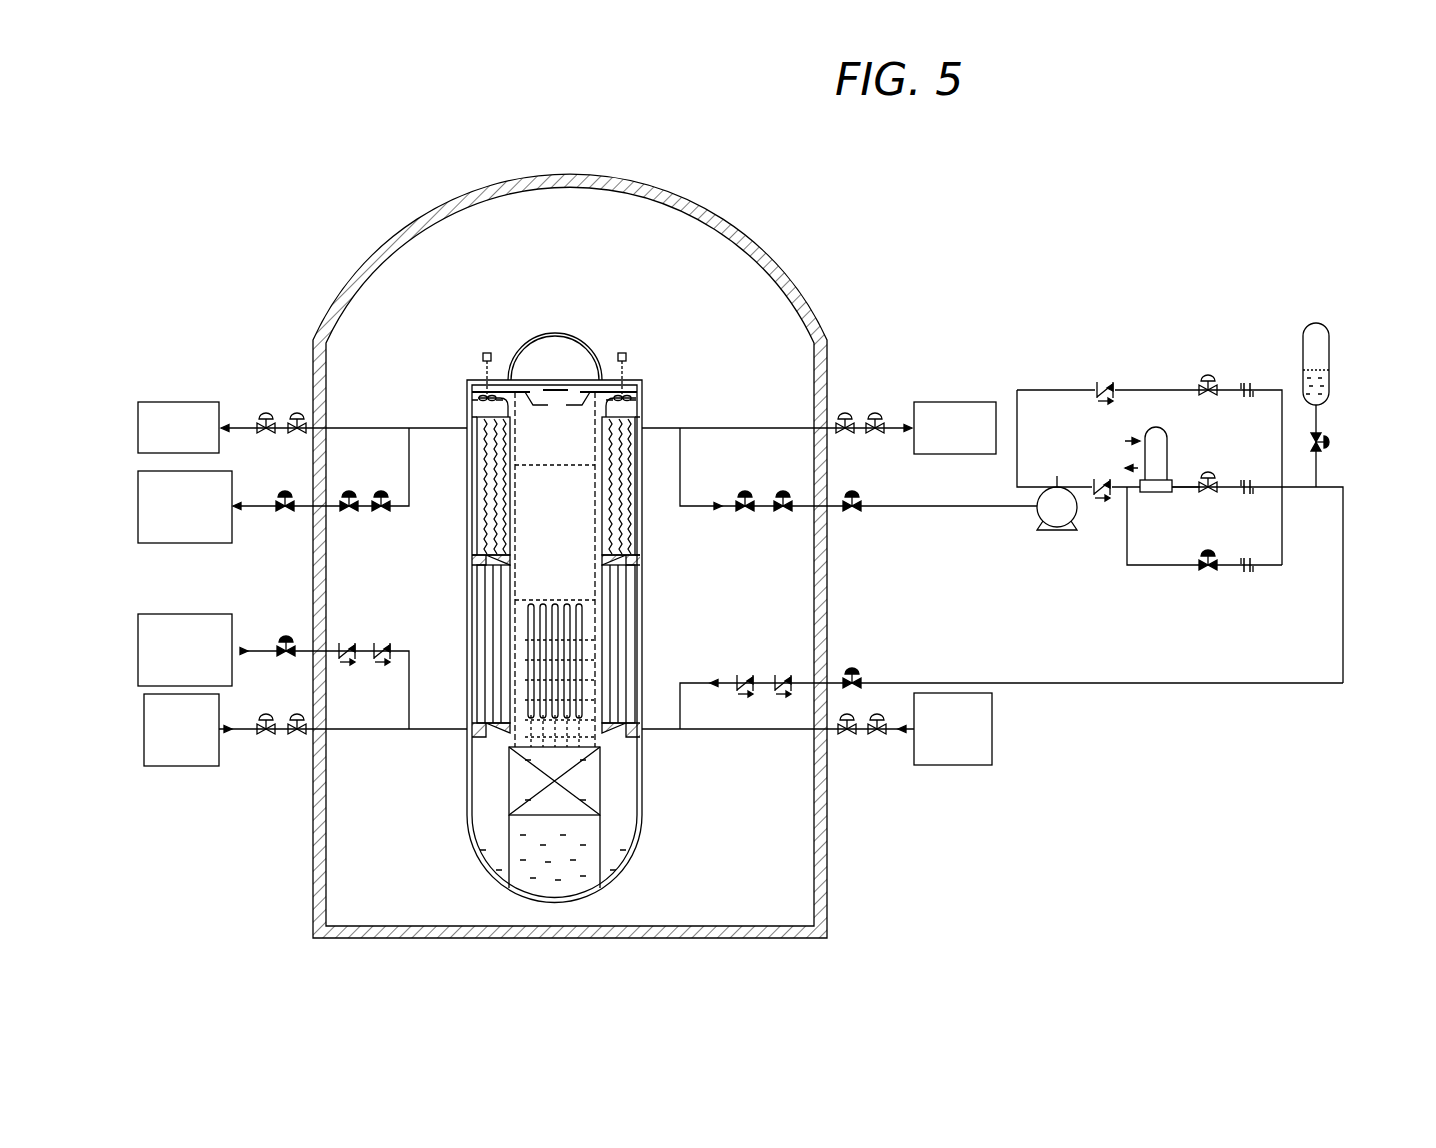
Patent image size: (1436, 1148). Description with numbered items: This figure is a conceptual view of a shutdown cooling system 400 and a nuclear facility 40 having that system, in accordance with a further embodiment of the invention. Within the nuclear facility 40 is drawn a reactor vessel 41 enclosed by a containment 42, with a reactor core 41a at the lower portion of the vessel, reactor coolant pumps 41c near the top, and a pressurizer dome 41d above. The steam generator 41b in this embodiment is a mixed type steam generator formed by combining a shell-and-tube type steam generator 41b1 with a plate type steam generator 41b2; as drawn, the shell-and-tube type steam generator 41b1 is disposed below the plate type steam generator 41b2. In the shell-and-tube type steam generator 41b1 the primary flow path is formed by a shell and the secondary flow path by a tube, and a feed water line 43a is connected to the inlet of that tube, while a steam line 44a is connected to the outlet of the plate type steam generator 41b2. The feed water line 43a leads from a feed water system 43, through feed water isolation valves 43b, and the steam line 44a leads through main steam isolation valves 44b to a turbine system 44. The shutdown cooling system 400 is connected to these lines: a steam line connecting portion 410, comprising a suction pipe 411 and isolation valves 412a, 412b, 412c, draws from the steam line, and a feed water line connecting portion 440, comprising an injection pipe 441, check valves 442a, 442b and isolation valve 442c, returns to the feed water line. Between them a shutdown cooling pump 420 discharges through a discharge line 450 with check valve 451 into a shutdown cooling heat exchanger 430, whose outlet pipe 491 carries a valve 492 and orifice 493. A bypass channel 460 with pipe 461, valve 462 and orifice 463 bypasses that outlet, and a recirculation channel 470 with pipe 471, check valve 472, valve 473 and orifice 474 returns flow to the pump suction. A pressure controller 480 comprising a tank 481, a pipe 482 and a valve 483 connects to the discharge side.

The nuclear facility 40 is at (240, 216).
The reactor vessel 41 is at (496, 593).
The reactor core 41a is at (505, 795).
The steam generator 41b is at (495, 577).
The shell-and-tube type steam generator 41b1 is at (519, 646).
The plate type steam generator 41b2 is at (470, 538).
The reactor coolant pump 41c is at (487, 350).
The pressurizer 41d is at (553, 345).
The containment 42 is at (423, 205).
The feed water system 43 is at (202, 766).
The feed water line 43a is at (660, 735).
The feed water isolation valves 43b is at (850, 740).
The turbine system 44 is at (188, 402).
The steam line 44a is at (659, 420).
The main steam isolation valves 44b is at (845, 418).
The shutdown cooling system 400 is at (1303, 268).
The steam line connecting portion 410 is at (858, 511).
The suction pipe 411 is at (708, 513).
The suction isolation valve 412a is at (746, 516).
The suction isolation valve 412b is at (785, 516).
The suction isolation valve 412c is at (855, 523).
The shutdown cooling pump 420 is at (1058, 532).
The shutdown cooling heat exchanger 430 is at (1168, 440).
The feed water line connecting portion 440 is at (1011, 662).
The injection pipe 441 is at (700, 678).
The injection check valve 442a is at (747, 673).
The injection check valve 442b is at (788, 673).
The injection isolation valve 442c is at (852, 661).
The discharge line 450 is at (1072, 485).
The discharge check valve 451 is at (1102, 500).
The bypass channel 460 is at (1204, 572).
The bypass pipe 461 is at (1152, 567).
The bypass valve 462 is at (1208, 577).
The bypass orifice 463 is at (1247, 588).
The recirculation channel 470 is at (1149, 420).
The recirculation pipe 471 is at (1060, 385).
The recirculation check valve 472 is at (1105, 380).
The recirculation valve 473 is at (1208, 376).
The recirculation orifice 474 is at (1245, 359).
The pressure controller 480 is at (1369, 405).
The makeup tank 481 is at (1330, 343).
The makeup pipe 482 is at (1318, 415).
The makeup valve 483 is at (1349, 437).
The heat exchanger outlet pipe 491 is at (1183, 496).
The heat exchanger outlet valve 492 is at (1210, 498).
The heat exchanger outlet orifice 493 is at (1250, 496).